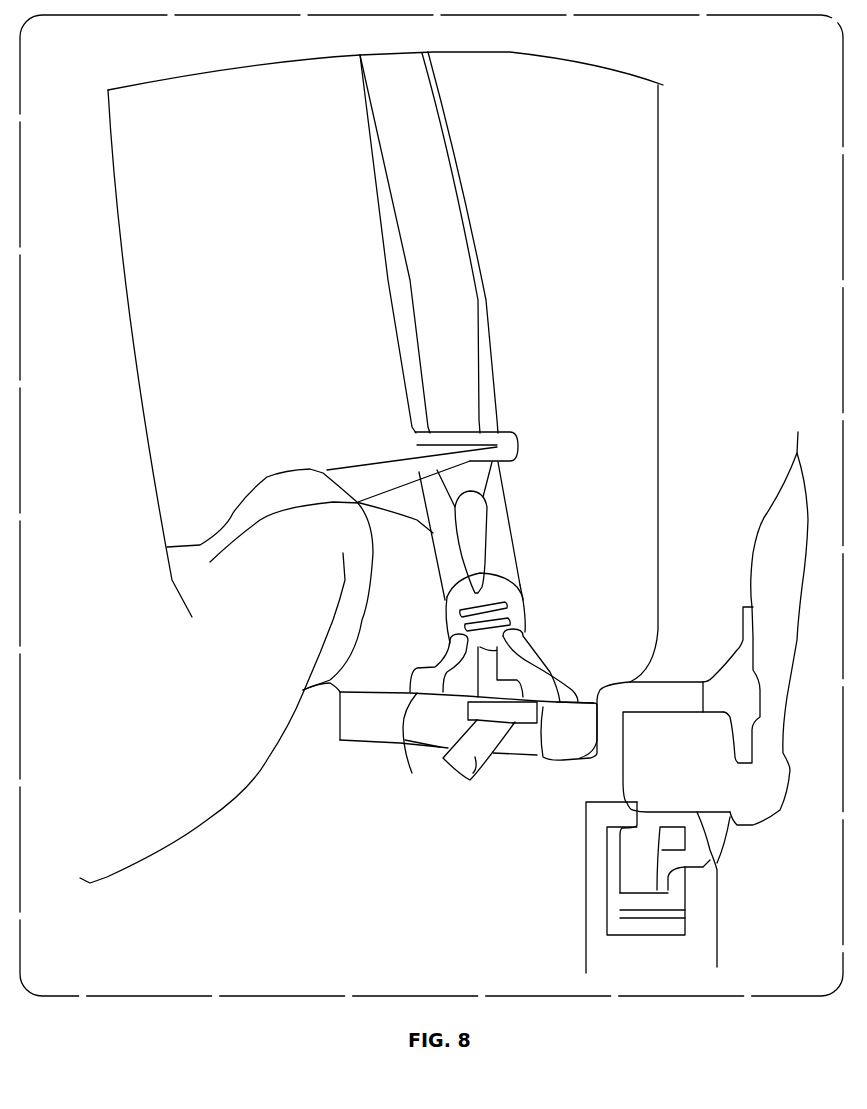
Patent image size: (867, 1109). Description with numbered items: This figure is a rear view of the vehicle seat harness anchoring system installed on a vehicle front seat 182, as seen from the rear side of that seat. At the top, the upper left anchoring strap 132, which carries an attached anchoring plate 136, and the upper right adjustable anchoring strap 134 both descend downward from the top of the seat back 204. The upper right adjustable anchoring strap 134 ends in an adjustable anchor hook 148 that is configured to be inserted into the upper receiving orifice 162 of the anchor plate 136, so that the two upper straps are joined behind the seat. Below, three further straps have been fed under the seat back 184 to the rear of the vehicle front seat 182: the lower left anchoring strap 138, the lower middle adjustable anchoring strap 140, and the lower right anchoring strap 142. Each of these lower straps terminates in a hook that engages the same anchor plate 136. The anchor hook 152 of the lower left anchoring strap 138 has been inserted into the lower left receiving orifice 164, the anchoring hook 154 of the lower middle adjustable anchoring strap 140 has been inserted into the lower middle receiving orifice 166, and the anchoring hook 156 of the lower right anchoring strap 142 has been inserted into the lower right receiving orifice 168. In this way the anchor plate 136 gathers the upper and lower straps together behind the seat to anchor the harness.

The upper left anchoring strap 132 is at (210, 562).
The upper right adjustable anchoring strap 134 is at (360, 457).
The anchoring plate 136 is at (520, 617).
The lower left anchoring strap 138 is at (412, 773).
The lower middle adjustable anchoring strap 140 is at (470, 780).
The lower right anchoring strap 142 is at (540, 760).
The adjustable anchor hook 148 is at (473, 547).
The anchor hook 152 is at (422, 743).
The anchoring hook 154 is at (495, 721).
The anchoring hook 156 is at (575, 702).
The upper receiving orifice 162 is at (483, 587).
The lower left receiving orifice 164 is at (453, 645).
The lower middle receiving orifice 166 is at (447, 617).
The lower right receiving orifice 168 is at (527, 635).
The vehicle front seat 182 is at (345, 940).
The seat back 184 is at (378, 687).
The seat back 204 is at (622, 77).